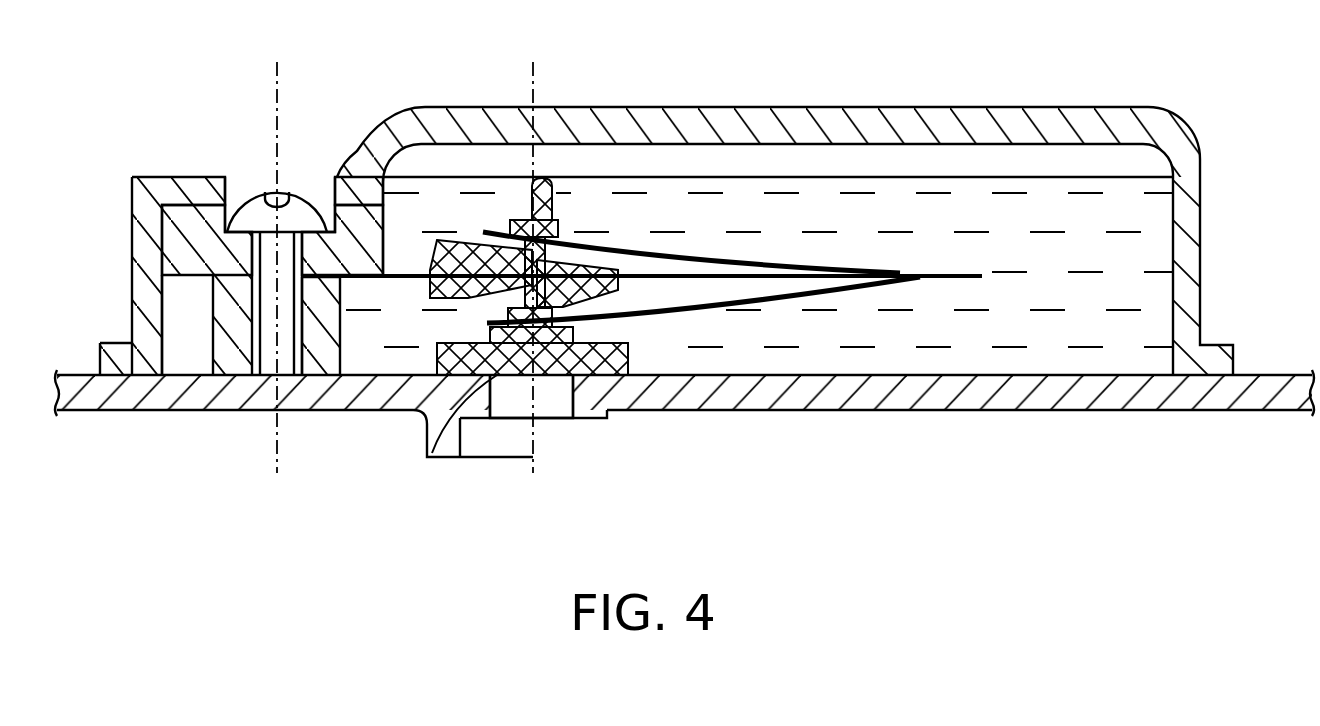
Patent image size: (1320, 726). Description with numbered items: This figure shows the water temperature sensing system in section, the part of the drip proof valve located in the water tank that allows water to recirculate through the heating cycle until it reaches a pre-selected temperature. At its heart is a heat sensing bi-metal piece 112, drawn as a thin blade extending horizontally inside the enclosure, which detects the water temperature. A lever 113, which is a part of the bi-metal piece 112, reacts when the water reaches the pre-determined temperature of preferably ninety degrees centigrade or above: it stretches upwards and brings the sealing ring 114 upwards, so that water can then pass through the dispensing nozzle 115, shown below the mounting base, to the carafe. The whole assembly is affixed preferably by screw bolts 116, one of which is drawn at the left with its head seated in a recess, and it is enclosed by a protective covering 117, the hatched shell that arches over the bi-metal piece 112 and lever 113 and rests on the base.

The heat sensing bi-metal piece 112 is at (655, 257).
The lever 113 is at (683, 313).
The sealing ring 114 is at (523, 353).
The dispensing nozzle 115 is at (533, 420).
The screw bolts 116 is at (263, 220).
The protective covering 117 is at (510, 127).